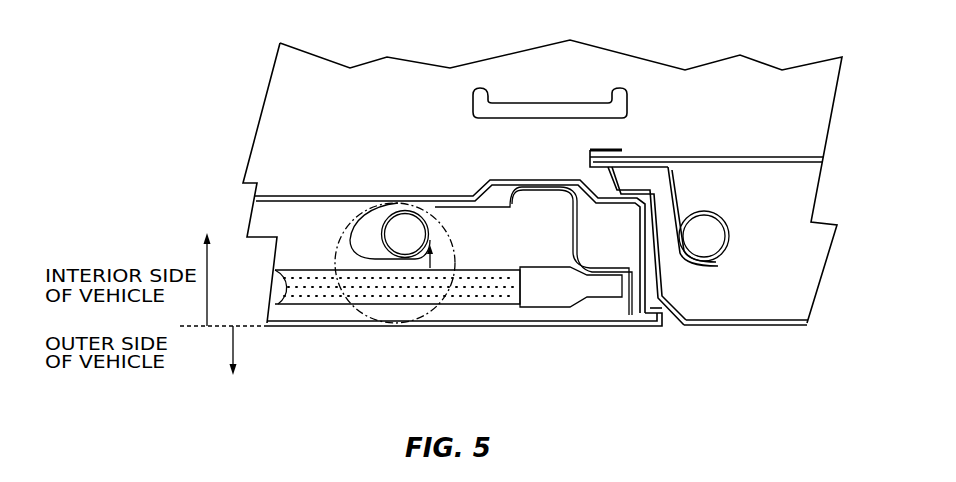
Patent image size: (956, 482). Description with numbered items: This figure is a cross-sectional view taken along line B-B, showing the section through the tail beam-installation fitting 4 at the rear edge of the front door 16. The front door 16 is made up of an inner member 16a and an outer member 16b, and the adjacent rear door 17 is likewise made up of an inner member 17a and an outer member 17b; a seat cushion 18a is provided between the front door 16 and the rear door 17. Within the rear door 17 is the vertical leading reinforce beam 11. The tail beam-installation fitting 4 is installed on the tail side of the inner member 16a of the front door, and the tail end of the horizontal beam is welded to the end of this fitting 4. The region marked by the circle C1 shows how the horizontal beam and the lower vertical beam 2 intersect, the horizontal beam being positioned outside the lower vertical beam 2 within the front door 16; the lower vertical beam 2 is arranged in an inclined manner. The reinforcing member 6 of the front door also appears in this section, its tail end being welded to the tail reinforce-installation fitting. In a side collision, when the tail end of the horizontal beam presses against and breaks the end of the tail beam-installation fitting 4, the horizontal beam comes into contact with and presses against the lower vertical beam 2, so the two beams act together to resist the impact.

The lower vertical beam 2 is at (403, 210).
The tail beam-installation fitting 4 is at (504, 203).
The reinforcing member 6 is at (452, 305).
The vertical leading reinforce beam 11 is at (728, 236).
The front door 16 is at (604, 342).
The inner member 16a is at (298, 195).
The outer member 16b is at (320, 327).
The rear door 17 is at (771, 346).
The inner member 17a is at (748, 160).
The outer member 17b is at (744, 324).
The seat cushion 18a is at (473, 97).
The circle C1 is at (408, 323).